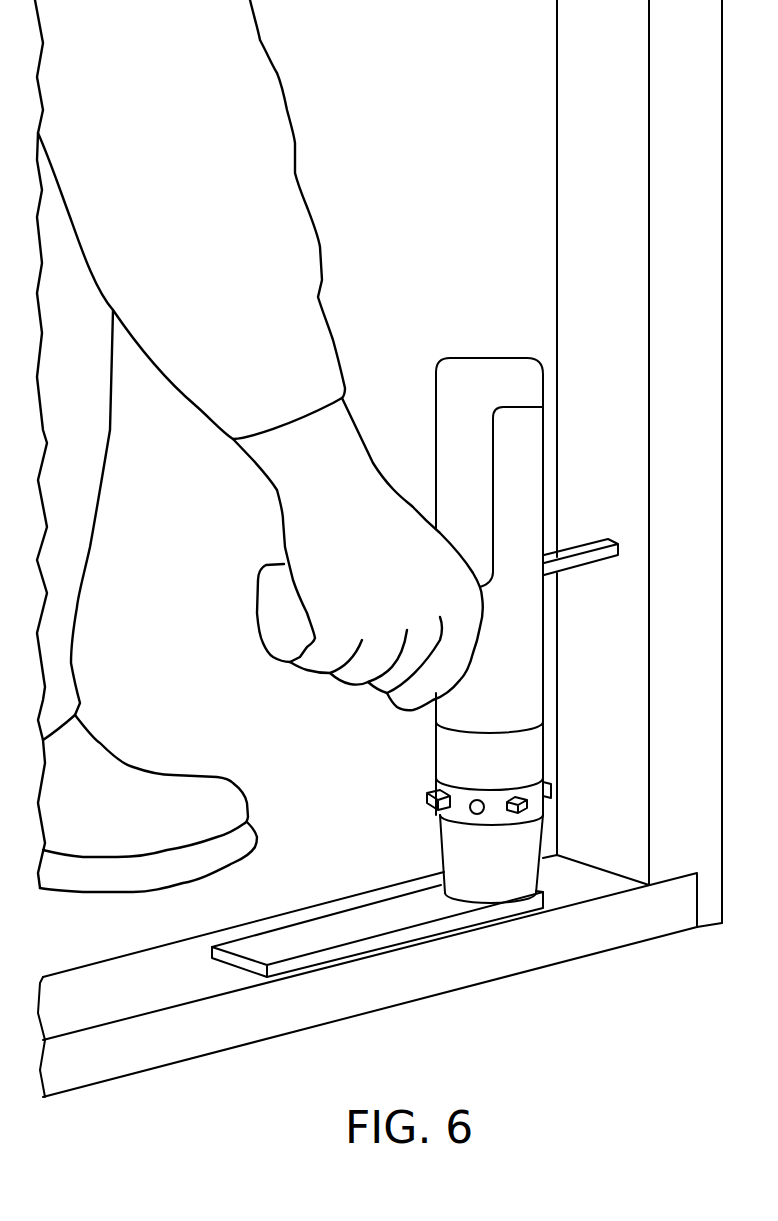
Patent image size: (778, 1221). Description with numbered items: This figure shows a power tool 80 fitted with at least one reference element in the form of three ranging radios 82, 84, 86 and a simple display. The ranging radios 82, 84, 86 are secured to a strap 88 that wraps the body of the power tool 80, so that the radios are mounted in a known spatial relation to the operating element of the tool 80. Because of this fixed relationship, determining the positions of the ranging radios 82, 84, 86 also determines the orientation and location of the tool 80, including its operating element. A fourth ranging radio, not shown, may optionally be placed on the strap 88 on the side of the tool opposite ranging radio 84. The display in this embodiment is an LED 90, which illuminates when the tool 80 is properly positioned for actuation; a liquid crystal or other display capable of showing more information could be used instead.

The power tool 80 is at (485, 362).
The ranging radio 82 is at (425, 797).
The ranging radio 84 is at (527, 807).
The ranging radio 86 is at (550, 792).
The strap 88 is at (453, 815).
The LED 90 is at (478, 800).